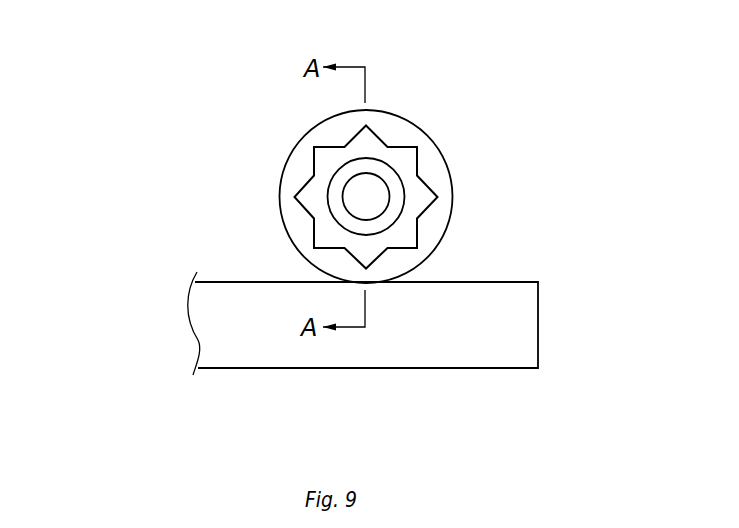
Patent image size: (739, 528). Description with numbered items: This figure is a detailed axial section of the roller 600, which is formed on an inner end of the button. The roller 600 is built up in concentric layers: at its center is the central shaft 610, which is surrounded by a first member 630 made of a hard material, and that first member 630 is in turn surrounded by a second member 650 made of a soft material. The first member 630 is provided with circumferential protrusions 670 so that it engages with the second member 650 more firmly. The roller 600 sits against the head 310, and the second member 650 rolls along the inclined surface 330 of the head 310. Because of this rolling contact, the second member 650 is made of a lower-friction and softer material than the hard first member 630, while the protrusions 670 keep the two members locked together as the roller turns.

The roller 600 is at (205, 88).
The central shaft 610 is at (370, 197).
The first member 630 is at (325, 155).
The second member 650 is at (438, 168).
The circumferential protrusions 670 is at (417, 147).
The head 310 is at (455, 343).
The inclined surface 330 is at (227, 277).